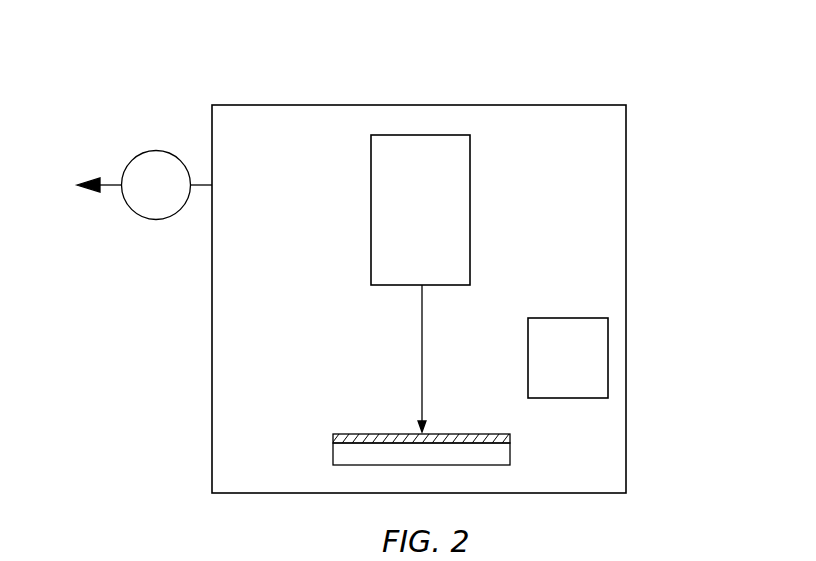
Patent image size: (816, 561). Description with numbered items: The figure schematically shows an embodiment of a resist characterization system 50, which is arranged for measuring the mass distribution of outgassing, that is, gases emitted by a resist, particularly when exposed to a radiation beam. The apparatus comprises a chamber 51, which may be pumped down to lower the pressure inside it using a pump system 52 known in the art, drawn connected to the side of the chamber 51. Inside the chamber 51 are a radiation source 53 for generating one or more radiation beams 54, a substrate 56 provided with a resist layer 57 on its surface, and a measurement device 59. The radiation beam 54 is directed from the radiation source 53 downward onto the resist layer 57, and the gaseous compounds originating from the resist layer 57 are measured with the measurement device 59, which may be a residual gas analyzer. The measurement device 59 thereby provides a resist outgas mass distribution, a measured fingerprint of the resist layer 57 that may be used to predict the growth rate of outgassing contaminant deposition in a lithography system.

The resist characterization system 50 is at (447, 67).
The chamber 51 is at (627, 220).
The pump system 52 is at (153, 151).
The radiation source 53 is at (471, 180).
The radiation beam 54 is at (420, 328).
The substrate 56 is at (512, 457).
The resist layer 57 is at (367, 434).
The measurement device 59 is at (608, 362).